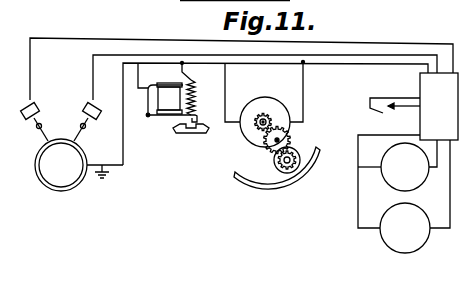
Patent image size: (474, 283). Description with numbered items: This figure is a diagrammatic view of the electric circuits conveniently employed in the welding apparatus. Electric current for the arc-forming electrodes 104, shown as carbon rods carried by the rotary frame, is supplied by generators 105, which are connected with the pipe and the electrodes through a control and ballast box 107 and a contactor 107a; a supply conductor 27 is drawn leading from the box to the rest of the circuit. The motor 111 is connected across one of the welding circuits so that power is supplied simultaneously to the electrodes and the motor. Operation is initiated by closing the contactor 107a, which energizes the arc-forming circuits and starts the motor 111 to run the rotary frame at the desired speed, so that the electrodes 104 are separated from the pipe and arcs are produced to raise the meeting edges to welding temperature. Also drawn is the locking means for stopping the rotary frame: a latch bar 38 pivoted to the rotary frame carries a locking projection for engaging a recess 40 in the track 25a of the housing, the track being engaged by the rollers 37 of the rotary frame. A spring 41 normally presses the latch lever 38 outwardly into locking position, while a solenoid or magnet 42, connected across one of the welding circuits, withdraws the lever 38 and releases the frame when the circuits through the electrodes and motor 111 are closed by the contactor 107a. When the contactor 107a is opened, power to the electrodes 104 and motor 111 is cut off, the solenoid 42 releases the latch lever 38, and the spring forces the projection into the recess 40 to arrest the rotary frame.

The supply conductor 27 is at (241, 52).
The electrode 104 is at (76, 131).
The solenoid 42 is at (158, 99).
The spring 41 is at (196, 98).
The latch bar 38 is at (152, 118).
The recess 40 is at (190, 133).
The motor 111 is at (280, 108).
The roller 37 is at (290, 172).
The track 25a is at (301, 165).
The control and ballast box 107 is at (439, 106).
The contactor 107a is at (379, 111).
The generator 105 is at (388, 214).